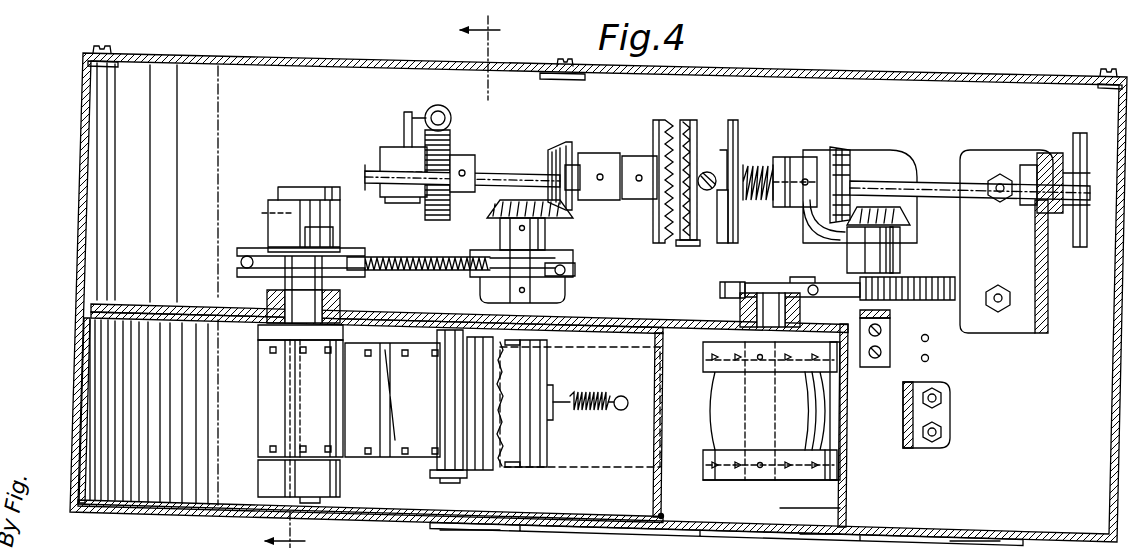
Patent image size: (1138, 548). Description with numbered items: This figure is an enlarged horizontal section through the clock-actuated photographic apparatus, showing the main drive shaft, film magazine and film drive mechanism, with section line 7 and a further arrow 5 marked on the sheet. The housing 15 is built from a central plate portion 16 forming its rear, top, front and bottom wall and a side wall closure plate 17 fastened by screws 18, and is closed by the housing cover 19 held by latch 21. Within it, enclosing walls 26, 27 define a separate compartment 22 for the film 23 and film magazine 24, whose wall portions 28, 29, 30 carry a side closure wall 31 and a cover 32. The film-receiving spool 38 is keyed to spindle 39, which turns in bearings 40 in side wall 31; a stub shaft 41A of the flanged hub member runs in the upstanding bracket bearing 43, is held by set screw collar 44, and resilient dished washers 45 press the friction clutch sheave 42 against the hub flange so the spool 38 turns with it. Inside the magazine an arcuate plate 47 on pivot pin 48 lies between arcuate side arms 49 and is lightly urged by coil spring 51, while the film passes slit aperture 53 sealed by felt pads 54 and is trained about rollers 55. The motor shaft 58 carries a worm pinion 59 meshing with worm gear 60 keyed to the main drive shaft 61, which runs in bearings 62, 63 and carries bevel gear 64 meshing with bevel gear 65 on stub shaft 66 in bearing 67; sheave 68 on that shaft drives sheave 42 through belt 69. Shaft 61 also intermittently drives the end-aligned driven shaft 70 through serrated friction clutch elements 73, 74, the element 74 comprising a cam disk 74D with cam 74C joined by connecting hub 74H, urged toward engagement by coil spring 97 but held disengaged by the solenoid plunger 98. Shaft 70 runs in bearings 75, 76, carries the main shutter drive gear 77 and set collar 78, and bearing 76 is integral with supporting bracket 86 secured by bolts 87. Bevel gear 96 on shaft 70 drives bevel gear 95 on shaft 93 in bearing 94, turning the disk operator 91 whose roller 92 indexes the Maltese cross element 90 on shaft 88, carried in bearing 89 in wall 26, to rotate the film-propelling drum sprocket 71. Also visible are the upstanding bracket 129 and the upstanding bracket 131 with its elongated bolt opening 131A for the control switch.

The base 5 is at (975, 540).
The section line 7 is at (398, 282).
The housing 15 is at (72, 226).
The central plate portion 16 is at (82, 130).
The side wall closure plate 17 is at (995, 80).
The screws 18 is at (104, 44).
The housing cover 19 is at (810, 534).
The latch 21 is at (430, 534).
The compartment 22 is at (812, 509).
The film 23 is at (268, 373).
The film magazine 24 is at (666, 485).
The enclosing wall 26 is at (640, 322).
The enclosing wall 27 is at (848, 496).
The magazine wall portion 28 is at (80, 412).
The front wall portion 29 is at (658, 486).
The magazine wall portion 30 is at (438, 526).
The side closure wall 31 is at (215, 322).
The cover 32 is at (212, 500).
The film-receiving spool 38 is at (262, 468).
The spindle 39 is at (285, 478).
The bearings 40 is at (265, 302).
The stub shaft 41A is at (262, 213).
The friction clutch sheave 42 is at (237, 250).
The bracket bearing 43 is at (270, 203).
The set screw collar 44 is at (278, 190).
The resilient dished washers 45 is at (305, 240).
The arcuate plate 47 is at (527, 430).
The pivot pin 48 is at (525, 347).
The arcuate side arms 49 is at (518, 360).
The coil spring 51 is at (592, 396).
The slit aperture 53 is at (470, 392).
The felt pads 54 is at (472, 418).
The rollers 55 is at (432, 472).
The shaft 58 is at (446, 108).
The worm pinion 59 is at (436, 110).
The worm gear 60 is at (448, 150).
The main drive shaft 61 is at (510, 174).
The bearing 62 is at (392, 147).
The bearing 63 is at (620, 152).
The bevel gear 64 is at (565, 142).
The bevel gear 65 is at (560, 218).
The stub shaft 66 is at (548, 246).
The bearing 67 is at (500, 238).
The sheave 68 is at (575, 268).
The belt 69 is at (240, 264).
The intermittently operable driven shaft 70 is at (940, 182).
The film-propelling drum sprocket 71 is at (745, 482).
The friction clutch element 73 is at (655, 118).
The friction clutch element 74 is at (700, 118).
The cam 74C is at (700, 252).
The cam disk 74D is at (740, 125).
The connecting hub 74H is at (742, 145).
The bearing 75 is at (792, 157).
The bearing 76 is at (1052, 153).
The main shutter drive gear 77 is at (1086, 150).
The set collar 78 is at (1027, 165).
The supporting bracket 86 is at (1048, 310).
The bolts 87 is at (1000, 312).
The shaft 88 is at (760, 396).
The bearing 89 is at (740, 313).
The Maltese cross element 90 is at (722, 284).
The disk operator 91 is at (800, 280).
The roller 92 is at (838, 310).
The shaft 93 is at (848, 256).
The bearing 94 is at (900, 255).
The bevel gear 95 is at (905, 220).
The bevel gear 96 is at (845, 148).
The coil spring 97 is at (756, 202).
The plunger 98 is at (708, 170).
The upstanding bracket 129 is at (912, 448).
The upstanding bracket 131 is at (890, 325).
The elongated bolt opening 131A is at (892, 313).